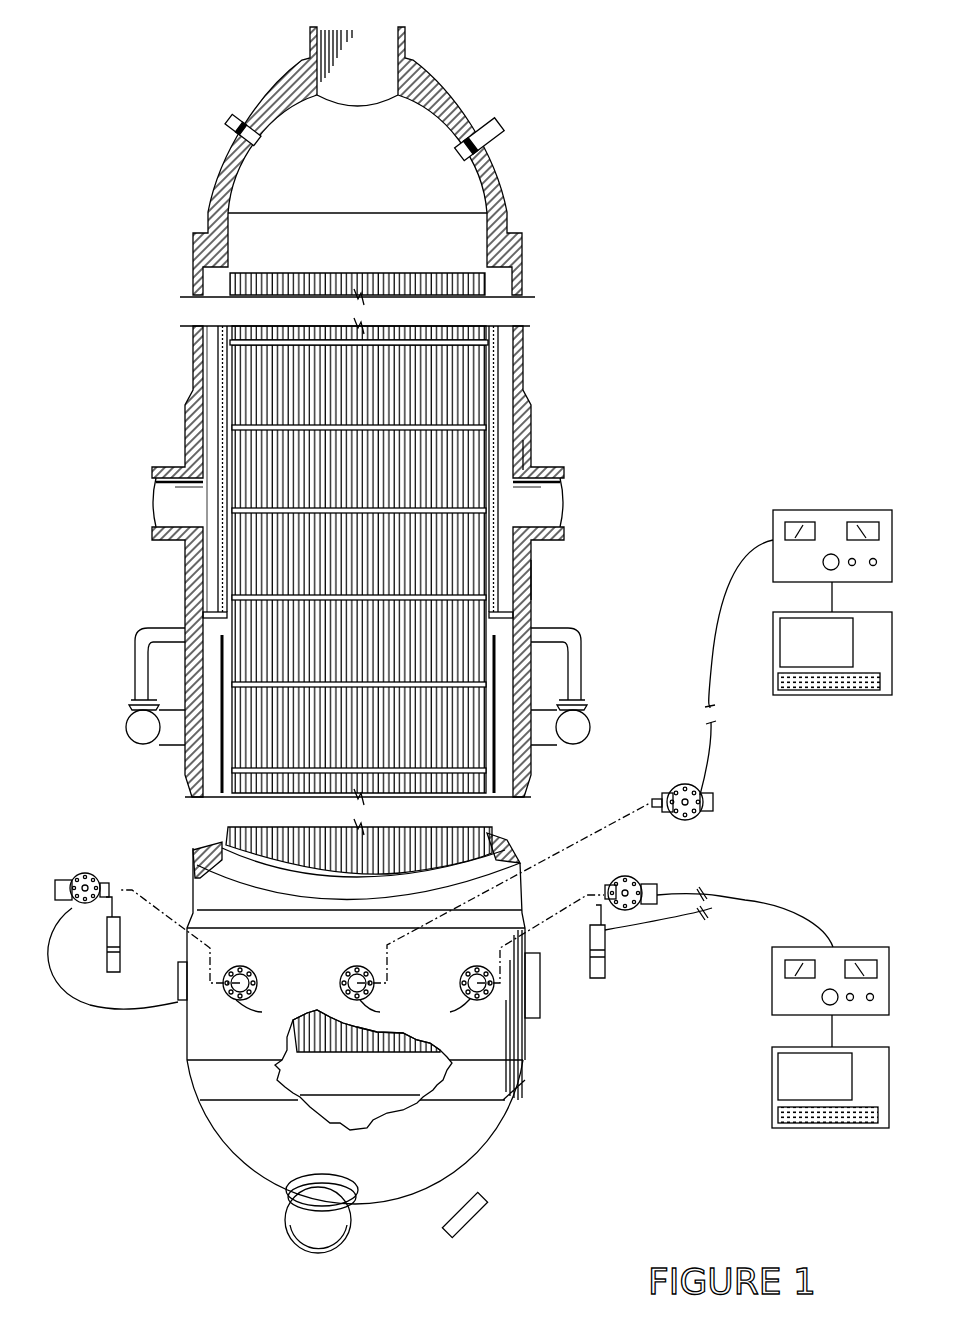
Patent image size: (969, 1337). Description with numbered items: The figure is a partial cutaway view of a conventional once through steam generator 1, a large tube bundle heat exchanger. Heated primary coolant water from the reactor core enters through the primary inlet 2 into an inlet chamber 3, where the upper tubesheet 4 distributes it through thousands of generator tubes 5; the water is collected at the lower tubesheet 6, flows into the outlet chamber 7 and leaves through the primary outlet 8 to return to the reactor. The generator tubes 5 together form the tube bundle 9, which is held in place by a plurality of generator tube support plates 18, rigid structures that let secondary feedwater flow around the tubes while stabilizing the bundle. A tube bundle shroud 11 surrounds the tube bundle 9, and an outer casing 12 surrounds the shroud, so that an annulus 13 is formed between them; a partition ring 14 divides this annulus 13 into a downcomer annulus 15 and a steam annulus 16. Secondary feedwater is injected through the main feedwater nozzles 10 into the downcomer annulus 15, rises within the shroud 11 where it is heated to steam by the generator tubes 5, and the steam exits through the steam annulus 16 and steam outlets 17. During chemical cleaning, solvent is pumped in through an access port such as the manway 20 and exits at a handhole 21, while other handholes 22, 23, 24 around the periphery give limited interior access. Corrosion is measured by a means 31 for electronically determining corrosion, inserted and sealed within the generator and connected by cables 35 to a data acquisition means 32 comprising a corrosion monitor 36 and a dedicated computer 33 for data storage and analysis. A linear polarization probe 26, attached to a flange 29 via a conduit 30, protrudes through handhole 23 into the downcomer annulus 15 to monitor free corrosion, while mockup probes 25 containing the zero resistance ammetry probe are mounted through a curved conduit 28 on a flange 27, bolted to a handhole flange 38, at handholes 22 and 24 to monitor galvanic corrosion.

The once through steam generator 1 is at (594, 73).
The primary inlet 2 is at (348, 82).
The inlet chamber 3 is at (348, 177).
The upper tubesheet 4 is at (468, 252).
The generator tubes 5 is at (250, 377).
The lower tubesheet 6 is at (433, 1085).
The outlet chamber 7 is at (346, 1117).
The primary outlet 8 is at (304, 1236).
The tube bundle 9 is at (349, 569).
The main feedwater nozzles 10 is at (183, 627).
The tube bundle shroud 11 is at (222, 793).
The outer casing 12 is at (533, 553).
The annulus 13 is at (210, 565).
The partition ring 14 is at (522, 582).
The downcomer annulus 15 is at (508, 770).
The steam annulus 16 is at (528, 468).
The steam outlets 17 is at (167, 524).
The generator tube support plates 18 is at (258, 347).
The manway 20 is at (540, 1012).
The handhole 21 is at (178, 983).
The handhole 22 is at (242, 966).
The handhole 23 is at (357, 966).
The handhole 24 is at (475, 966).
The mockup probe 25 is at (108, 937).
The linear polarization probe 26 is at (668, 790).
The flange 27 is at (85, 870).
The curved conduit 28 is at (105, 905).
The flange 29 is at (692, 818).
The conduit 30 is at (663, 810).
The means for electronically determining corrosion 31 is at (134, 947).
The data acquisition means 32 is at (768, 484).
The dedicated computer 33 is at (850, 695).
The cables 35 is at (87, 990).
The corrosion monitor 36 is at (820, 510).
The handhole flange 38 is at (353, 1012).